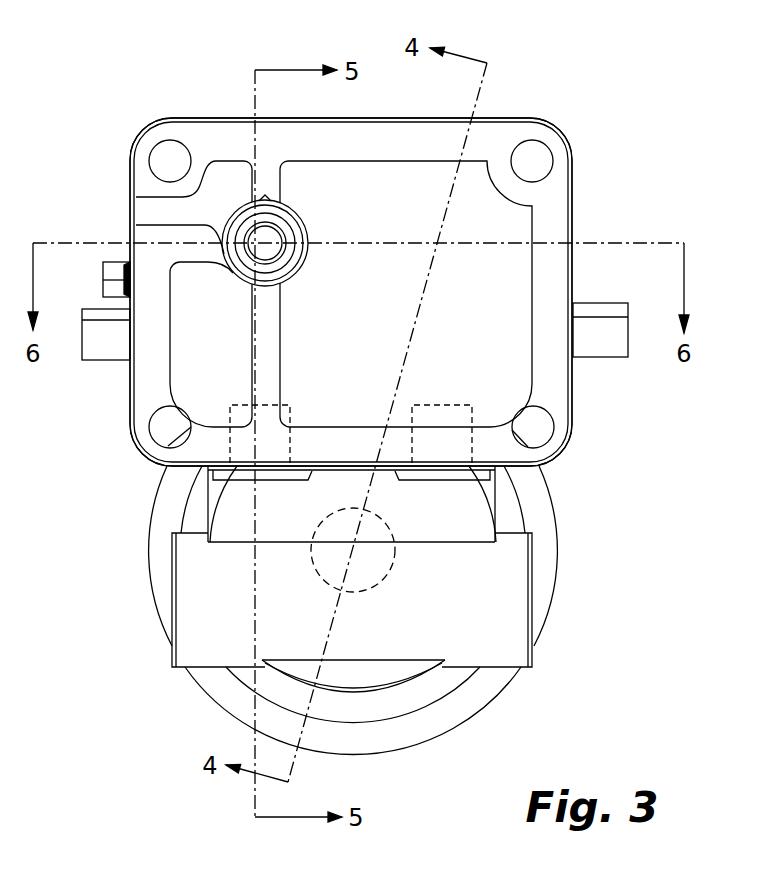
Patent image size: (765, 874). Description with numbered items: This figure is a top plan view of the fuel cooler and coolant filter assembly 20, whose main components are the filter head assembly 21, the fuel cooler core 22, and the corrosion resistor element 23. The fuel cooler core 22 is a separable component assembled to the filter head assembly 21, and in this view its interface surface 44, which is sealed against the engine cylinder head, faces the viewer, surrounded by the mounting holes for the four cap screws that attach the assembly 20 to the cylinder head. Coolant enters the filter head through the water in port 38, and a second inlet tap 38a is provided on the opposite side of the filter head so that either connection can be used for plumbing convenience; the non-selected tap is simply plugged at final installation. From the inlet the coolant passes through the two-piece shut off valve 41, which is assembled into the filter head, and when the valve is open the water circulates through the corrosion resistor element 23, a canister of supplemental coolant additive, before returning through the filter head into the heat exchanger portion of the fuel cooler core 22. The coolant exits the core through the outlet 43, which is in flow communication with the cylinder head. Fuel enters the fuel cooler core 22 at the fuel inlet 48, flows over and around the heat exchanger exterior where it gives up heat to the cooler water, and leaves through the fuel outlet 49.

The fuel cooler and coolant filter assembly 20 is at (662, 203).
The filter head assembly 21 is at (197, 567).
The fuel cooler core 22 is at (552, 205).
The corrosion resistor element 23 is at (545, 553).
The water in port 38 is at (160, 640).
The inlet tap 38a is at (545, 625).
The shut off valve 41 is at (96, 342).
The outlet 43 is at (266, 250).
The interface surface 44 is at (503, 137).
The fuel inlet 48 is at (250, 478).
The fuel outlet 49 is at (445, 478).